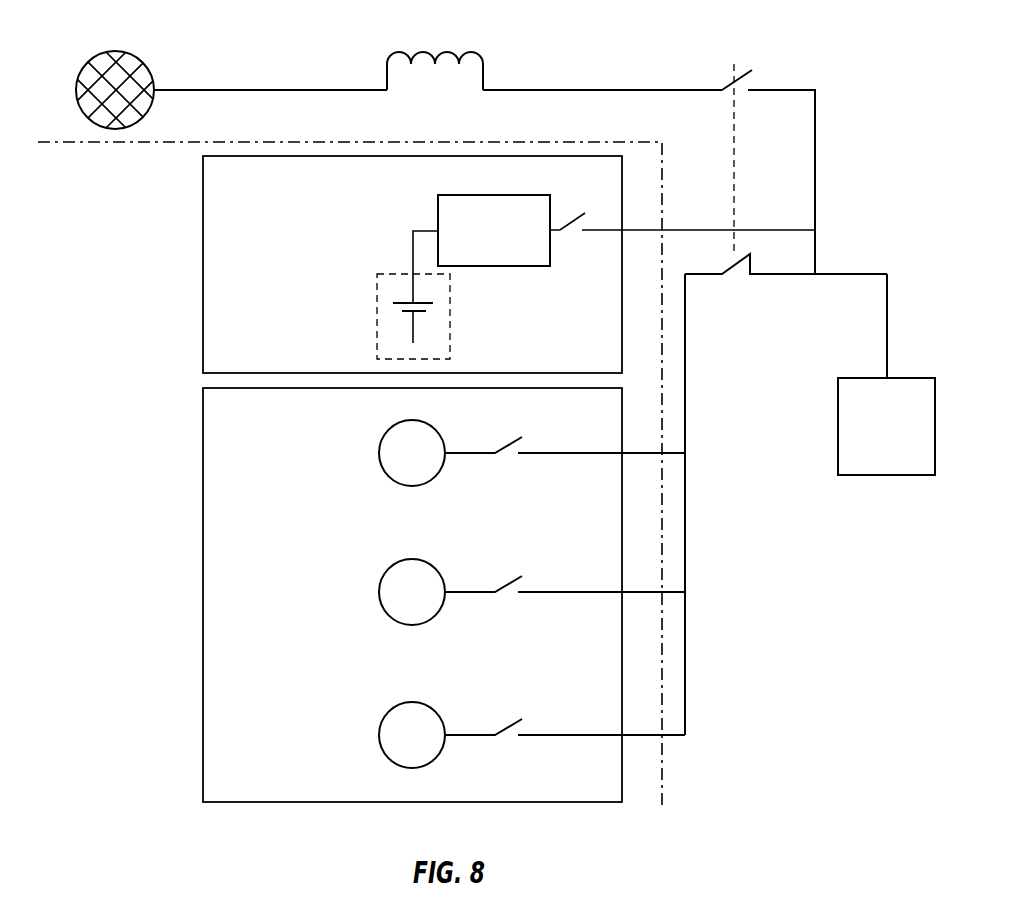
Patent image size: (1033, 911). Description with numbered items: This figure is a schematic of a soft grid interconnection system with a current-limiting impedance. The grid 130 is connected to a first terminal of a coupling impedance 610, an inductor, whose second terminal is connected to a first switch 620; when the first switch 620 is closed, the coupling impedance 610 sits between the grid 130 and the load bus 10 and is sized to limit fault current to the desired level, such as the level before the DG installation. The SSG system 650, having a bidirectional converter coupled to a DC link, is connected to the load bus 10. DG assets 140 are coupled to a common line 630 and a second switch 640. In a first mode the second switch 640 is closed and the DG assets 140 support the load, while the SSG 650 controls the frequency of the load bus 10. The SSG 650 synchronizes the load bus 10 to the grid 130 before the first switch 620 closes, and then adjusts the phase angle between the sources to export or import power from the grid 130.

The load bus 10 is at (865, 262).
The grid 130 is at (177, 89).
The DG assets 140 is at (379, 453).
The coupling impedance 610 is at (456, 42).
The first switch 620 is at (776, 54).
The common line 630 is at (692, 554).
The second switch 640 is at (740, 304).
The SSG system 650 is at (376, 210).